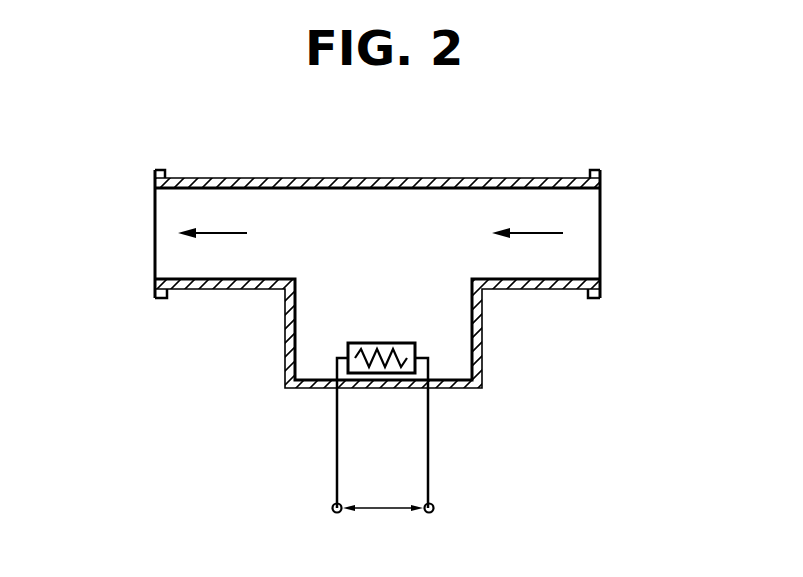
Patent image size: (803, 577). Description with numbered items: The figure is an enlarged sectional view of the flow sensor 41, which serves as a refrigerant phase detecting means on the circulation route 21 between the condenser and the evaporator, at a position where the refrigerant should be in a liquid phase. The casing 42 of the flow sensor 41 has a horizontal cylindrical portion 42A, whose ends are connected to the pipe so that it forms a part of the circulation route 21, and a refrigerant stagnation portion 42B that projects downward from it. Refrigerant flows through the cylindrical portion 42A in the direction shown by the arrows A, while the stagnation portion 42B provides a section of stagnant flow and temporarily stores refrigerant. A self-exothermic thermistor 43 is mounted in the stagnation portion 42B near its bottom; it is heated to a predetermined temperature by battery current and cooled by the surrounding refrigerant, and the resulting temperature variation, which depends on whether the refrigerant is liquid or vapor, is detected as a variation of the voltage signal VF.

The circulation route 21 is at (177, 208).
The flow sensor 41 is at (543, 176).
The casing 42 is at (213, 178).
The cylindrical portion 42A is at (566, 293).
The refrigerant stagnation portion 42B is at (286, 338).
The thermistor 43 is at (415, 350).